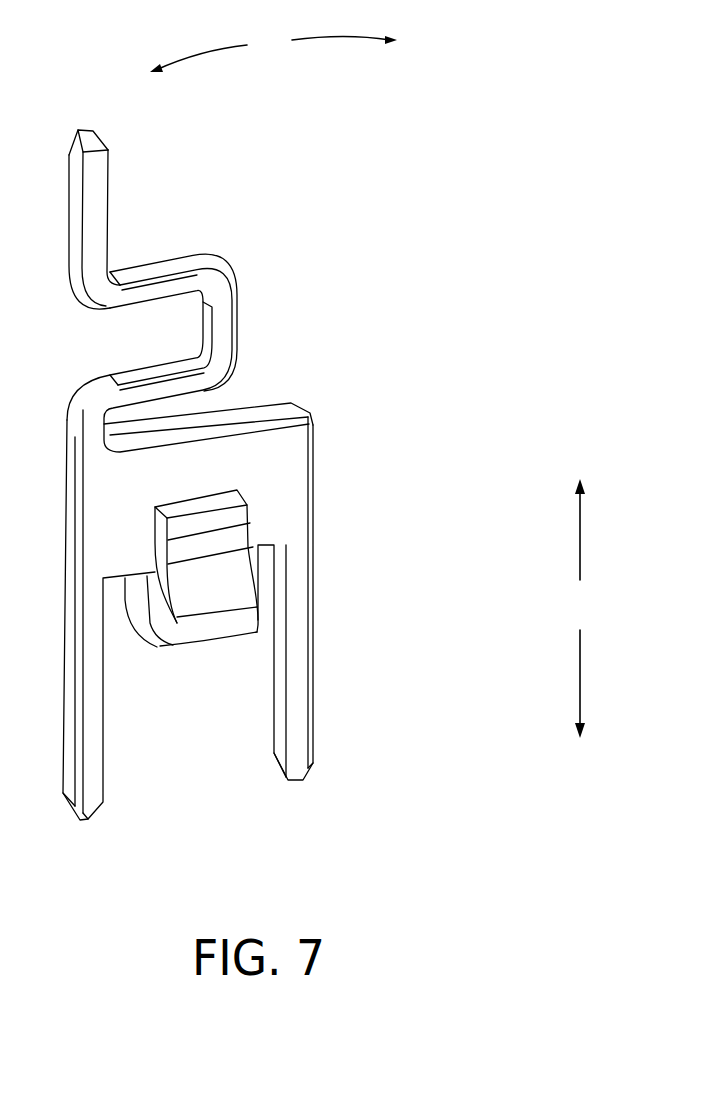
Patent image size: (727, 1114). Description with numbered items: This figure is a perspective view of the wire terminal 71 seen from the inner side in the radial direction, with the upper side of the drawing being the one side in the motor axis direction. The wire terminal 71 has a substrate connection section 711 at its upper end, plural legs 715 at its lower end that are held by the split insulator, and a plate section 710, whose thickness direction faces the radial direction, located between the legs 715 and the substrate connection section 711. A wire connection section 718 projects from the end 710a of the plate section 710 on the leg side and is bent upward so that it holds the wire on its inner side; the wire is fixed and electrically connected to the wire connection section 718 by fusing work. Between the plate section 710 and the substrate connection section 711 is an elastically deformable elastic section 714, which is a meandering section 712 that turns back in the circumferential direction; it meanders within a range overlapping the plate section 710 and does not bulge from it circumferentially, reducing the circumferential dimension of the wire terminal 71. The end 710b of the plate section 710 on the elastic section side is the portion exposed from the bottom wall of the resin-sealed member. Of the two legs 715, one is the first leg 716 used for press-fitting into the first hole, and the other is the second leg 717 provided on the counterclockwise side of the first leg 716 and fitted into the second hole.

The wire terminal 71 is at (312, 279).
The substrate connection section 711 is at (100, 168).
The meandering section 712 is at (188, 291).
The elastic section 714 is at (262, 236).
The plate section 710 is at (295, 477).
The end of plate section on leg side 710a is at (233, 416).
The end of plate section on elastic section side 710b is at (126, 605).
The wire connection section 718 is at (250, 575).
The legs 715 is at (250, 811).
The first leg 716 is at (300, 758).
The second leg 717 is at (93, 808).